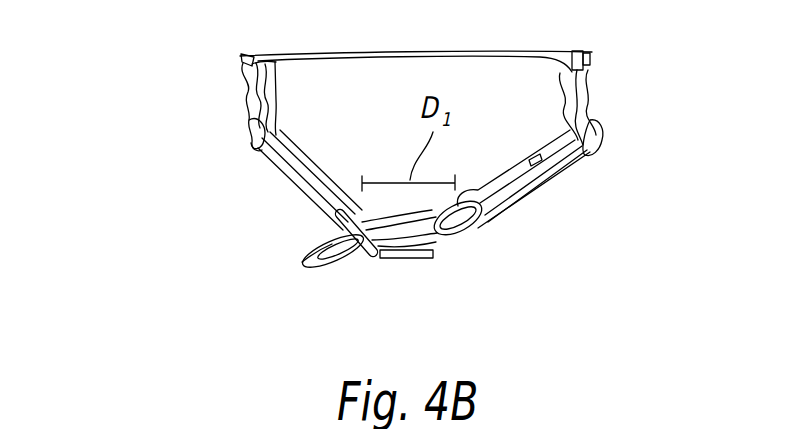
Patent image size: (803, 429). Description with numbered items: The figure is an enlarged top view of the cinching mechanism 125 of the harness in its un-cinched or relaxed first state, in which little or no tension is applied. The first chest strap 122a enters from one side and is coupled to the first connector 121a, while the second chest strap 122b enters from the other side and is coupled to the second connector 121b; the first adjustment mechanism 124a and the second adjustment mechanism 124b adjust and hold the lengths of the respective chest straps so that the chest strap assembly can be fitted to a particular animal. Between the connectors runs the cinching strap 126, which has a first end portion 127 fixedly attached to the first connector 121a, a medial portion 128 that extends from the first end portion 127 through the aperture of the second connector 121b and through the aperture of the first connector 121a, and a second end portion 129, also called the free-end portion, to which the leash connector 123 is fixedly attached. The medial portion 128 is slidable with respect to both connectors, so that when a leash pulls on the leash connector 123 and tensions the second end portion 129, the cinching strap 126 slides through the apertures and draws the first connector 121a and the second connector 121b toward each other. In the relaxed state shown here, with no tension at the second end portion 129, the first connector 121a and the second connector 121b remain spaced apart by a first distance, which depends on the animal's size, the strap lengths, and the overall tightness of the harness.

The cinching mechanism 125 is at (136, 65).
The first adjustment mechanism 124a is at (245, 140).
The second adjustment mechanism 124b is at (598, 152).
The first chest strap 122a is at (308, 194).
The second chest strap 122b is at (530, 200).
The leash connector 123 is at (306, 262).
The second end portion 129 is at (330, 272).
The first connector 121a is at (375, 256).
The second connector 121b is at (487, 236).
The first end portion 127 is at (395, 259).
The medial portion 128 is at (458, 248).
The cinching strap 126 is at (462, 245).